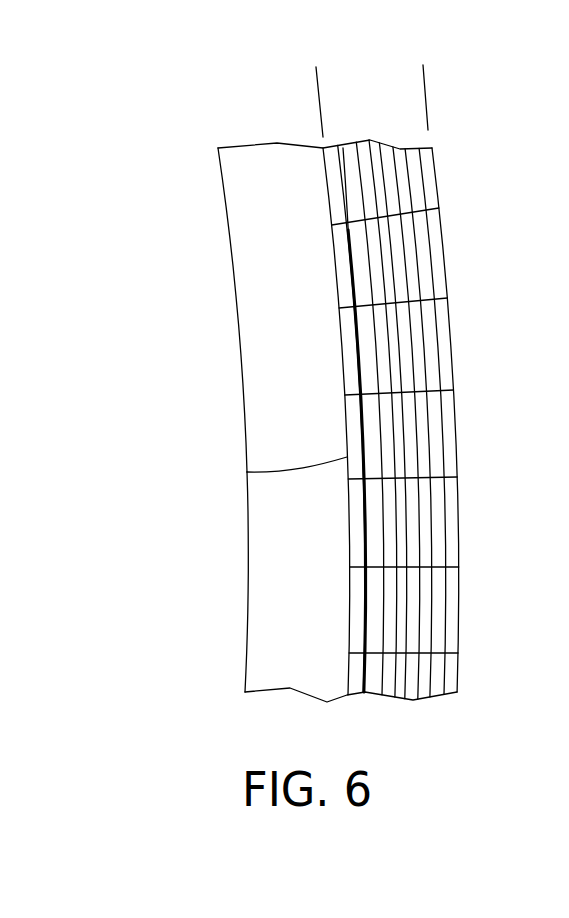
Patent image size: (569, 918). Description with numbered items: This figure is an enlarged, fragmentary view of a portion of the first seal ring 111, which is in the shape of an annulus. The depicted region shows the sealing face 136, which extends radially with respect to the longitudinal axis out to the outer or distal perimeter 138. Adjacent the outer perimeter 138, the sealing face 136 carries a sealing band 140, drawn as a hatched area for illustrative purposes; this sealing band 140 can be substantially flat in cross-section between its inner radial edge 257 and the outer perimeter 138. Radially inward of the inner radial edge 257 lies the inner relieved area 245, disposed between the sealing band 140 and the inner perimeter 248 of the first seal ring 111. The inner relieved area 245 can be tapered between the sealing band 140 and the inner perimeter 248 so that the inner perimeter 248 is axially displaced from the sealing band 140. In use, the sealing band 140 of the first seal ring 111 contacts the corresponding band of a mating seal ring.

The first seal ring 111 is at (252, 132).
The sealing face 136 is at (283, 225).
The outer perimeter 138 is at (443, 250).
The sealing band 140 is at (478, 86).
The inner relieved area 245 is at (293, 389).
The inner perimeter 248 is at (247, 525).
The inner radial edge 257 is at (247, 472).